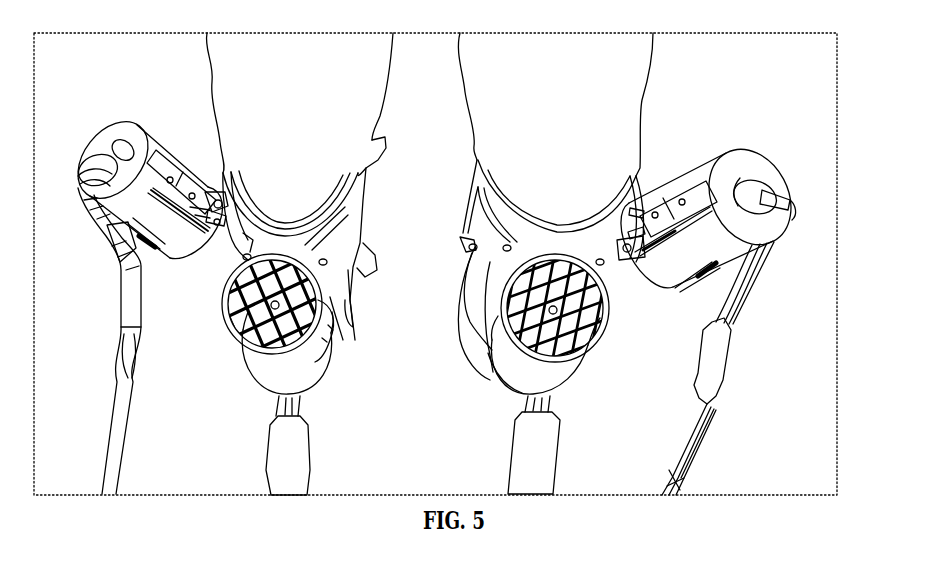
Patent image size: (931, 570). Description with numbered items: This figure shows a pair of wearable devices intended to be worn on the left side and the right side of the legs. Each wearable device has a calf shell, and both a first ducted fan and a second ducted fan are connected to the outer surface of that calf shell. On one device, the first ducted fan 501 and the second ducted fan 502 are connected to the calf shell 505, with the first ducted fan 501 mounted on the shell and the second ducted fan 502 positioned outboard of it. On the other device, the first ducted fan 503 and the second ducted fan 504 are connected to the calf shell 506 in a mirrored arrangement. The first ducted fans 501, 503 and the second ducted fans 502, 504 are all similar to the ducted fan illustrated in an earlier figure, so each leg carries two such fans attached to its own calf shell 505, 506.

The first ducted fan 501 is at (245, 355).
The second ducted fan 502 is at (130, 125).
The first ducted fan 503 is at (603, 342).
The second ducted fan 504 is at (747, 155).
The calf shell 505 is at (362, 197).
The calf shell 506 is at (480, 233).